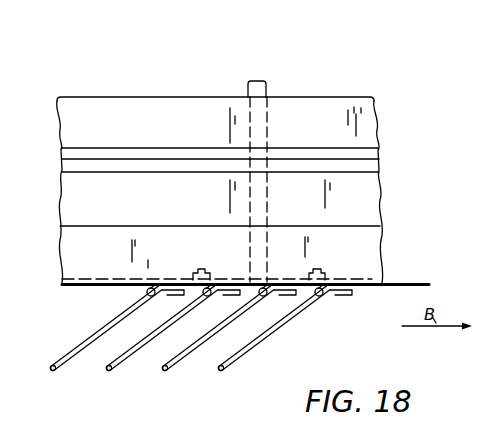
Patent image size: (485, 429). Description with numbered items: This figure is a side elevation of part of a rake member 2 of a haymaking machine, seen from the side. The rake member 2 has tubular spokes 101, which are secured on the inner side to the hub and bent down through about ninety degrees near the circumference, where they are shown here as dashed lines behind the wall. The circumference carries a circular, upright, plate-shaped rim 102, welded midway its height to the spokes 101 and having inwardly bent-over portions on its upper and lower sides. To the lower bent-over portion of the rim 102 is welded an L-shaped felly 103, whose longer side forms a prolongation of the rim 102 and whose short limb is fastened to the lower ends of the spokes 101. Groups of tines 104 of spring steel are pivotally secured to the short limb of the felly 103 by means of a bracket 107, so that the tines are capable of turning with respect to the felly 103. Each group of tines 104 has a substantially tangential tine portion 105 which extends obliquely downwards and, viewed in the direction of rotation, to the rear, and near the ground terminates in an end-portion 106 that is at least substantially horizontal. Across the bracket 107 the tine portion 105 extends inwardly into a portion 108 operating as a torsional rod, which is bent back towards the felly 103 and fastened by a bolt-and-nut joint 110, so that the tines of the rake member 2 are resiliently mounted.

The rake member 2 is at (52, 120).
The tubular spoke 101 is at (258, 80).
The rim 102 is at (368, 112).
The felly 103 is at (378, 234).
The group of tines 104 is at (111, 321).
The tine portion 105 is at (171, 310).
The end-portion 106 is at (107, 371).
The bracket 107 is at (226, 297).
The torsional rod portion 108 is at (418, 281).
The bolt-and-nut joint 110 is at (204, 268).